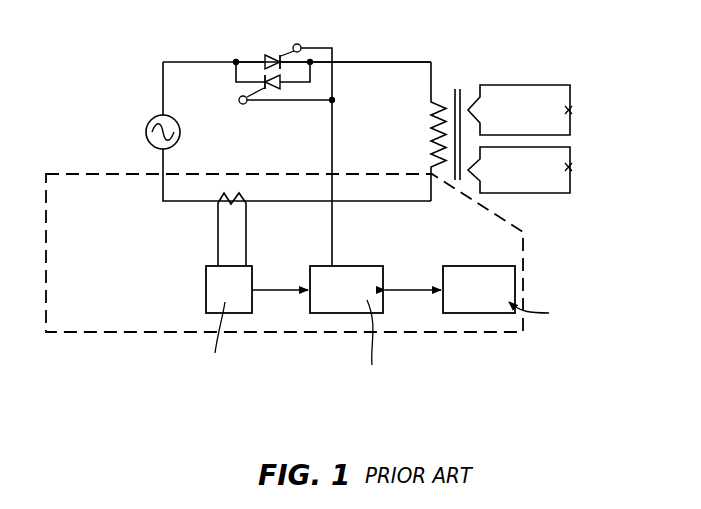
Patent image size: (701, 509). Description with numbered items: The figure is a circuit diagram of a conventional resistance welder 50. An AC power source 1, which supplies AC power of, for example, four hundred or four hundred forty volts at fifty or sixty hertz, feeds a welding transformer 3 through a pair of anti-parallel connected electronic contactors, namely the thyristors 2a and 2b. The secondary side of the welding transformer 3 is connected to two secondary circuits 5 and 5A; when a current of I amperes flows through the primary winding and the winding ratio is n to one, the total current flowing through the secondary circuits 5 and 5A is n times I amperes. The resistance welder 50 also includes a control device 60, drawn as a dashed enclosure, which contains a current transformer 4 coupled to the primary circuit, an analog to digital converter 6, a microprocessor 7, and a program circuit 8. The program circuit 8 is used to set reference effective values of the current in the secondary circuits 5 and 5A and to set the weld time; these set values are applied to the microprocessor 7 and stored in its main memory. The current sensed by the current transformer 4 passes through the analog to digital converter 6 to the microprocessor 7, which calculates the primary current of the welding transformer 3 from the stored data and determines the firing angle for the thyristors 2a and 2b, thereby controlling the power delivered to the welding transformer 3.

The resistance welder 50 is at (114, 68).
The AC power source 1 is at (177, 118).
The thyristor 2a is at (279, 55).
The thyristor 2b is at (267, 90).
The welding transformer 3 is at (464, 90).
The current transformer 4 is at (231, 200).
The secondary circuit 5 is at (571, 99).
The secondary circuit 5A is at (571, 160).
The analog to digital converter 6 is at (251, 268).
The microprocessor 7 is at (347, 270).
The program circuit 8 is at (463, 270).
The control device 60 is at (85, 324).